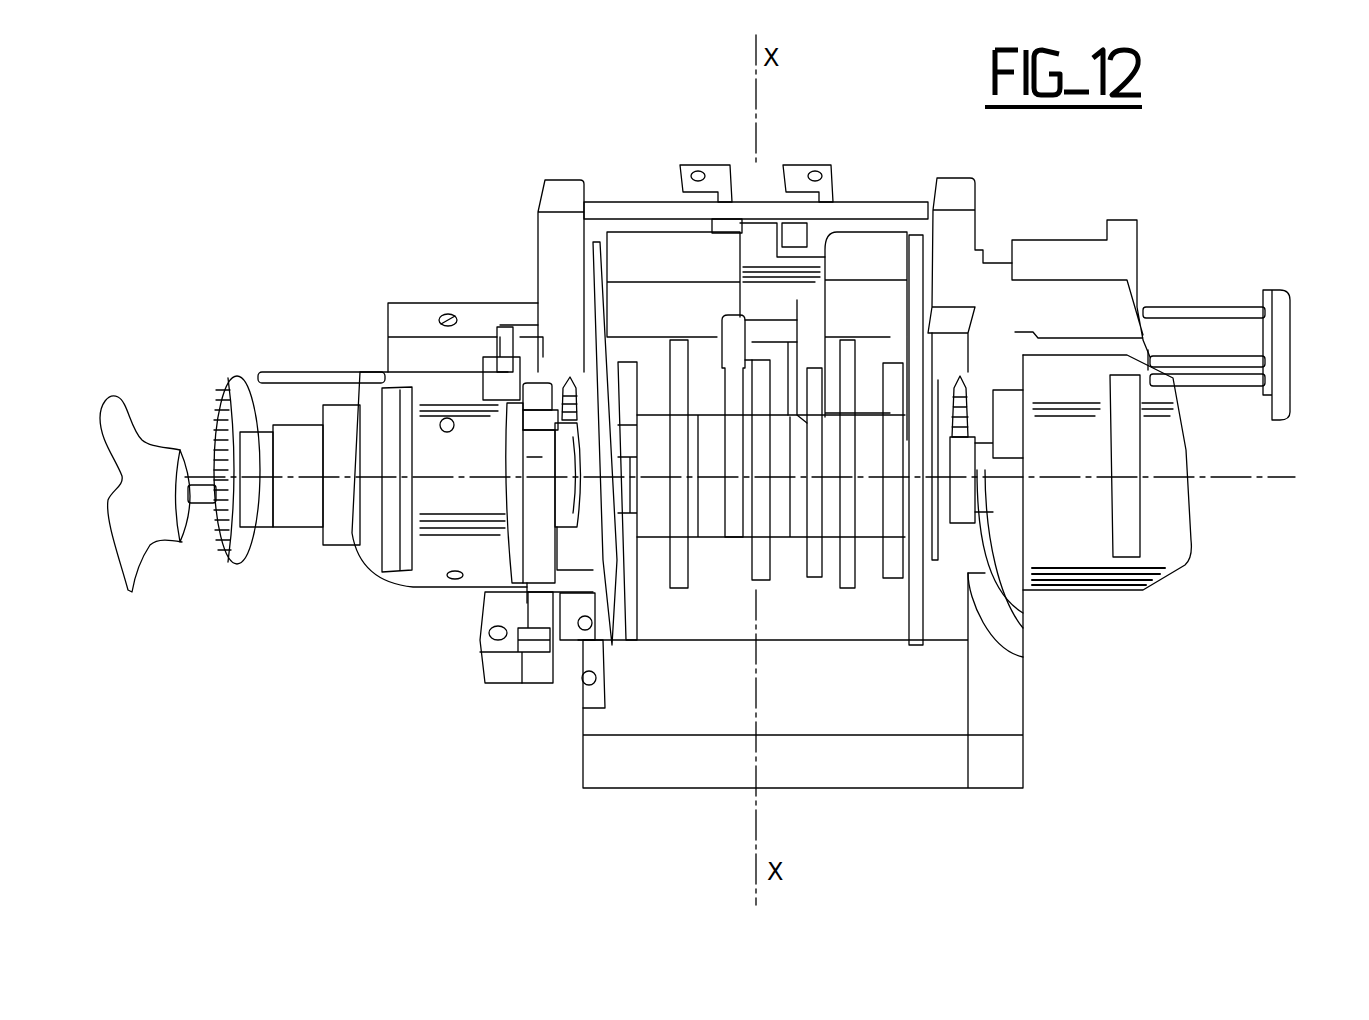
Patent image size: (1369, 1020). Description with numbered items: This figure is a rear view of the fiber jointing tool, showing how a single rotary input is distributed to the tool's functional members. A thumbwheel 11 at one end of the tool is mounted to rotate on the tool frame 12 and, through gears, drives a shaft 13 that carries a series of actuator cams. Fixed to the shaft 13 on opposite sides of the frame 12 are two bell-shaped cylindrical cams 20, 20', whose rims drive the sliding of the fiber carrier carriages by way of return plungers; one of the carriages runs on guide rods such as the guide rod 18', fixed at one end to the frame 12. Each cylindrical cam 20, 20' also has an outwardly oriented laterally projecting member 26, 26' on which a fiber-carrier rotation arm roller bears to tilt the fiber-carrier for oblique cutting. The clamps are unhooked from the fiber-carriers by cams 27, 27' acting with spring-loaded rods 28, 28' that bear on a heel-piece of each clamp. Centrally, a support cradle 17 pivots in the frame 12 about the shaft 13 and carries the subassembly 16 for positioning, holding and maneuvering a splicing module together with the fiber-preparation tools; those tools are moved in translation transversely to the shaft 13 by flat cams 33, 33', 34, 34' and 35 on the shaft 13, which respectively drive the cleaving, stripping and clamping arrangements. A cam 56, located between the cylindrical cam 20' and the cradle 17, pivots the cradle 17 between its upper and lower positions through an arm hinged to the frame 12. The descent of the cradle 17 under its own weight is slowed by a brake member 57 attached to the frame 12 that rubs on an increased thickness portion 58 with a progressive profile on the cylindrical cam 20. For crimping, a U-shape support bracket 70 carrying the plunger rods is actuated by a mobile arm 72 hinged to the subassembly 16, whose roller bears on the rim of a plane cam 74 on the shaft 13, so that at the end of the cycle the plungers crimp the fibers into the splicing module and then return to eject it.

The thumbwheel 11 is at (160, 525).
The tool frame 12 is at (1007, 708).
The shaft 13 is at (1023, 613).
The subassembly 16 is at (862, 250).
The support cradle 17 is at (612, 652).
The guide rod 18' is at (1216, 317).
The bell-shaped cylindrical cam 20 is at (472, 524).
The bell-shaped cylindrical cam 20' is at (1150, 472).
The laterally projecting member 26 is at (360, 520).
The laterally projecting member 26' is at (1191, 466).
The cam 27 is at (500, 555).
The cam 27' is at (1068, 564).
The spring-loaded rod 28 is at (533, 293).
The spring-loaded rod 28' is at (1050, 351).
The flat cam 33 is at (632, 612).
The flat cam 33' is at (911, 547).
The flat cam 34 is at (693, 531).
The flat cam 34' is at (865, 522).
The flat cam 35 is at (767, 580).
The cam 56 is at (1023, 657).
The brake member 57 is at (512, 683).
The increased thickness portion 58 is at (492, 358).
The U-shape support bracket 70 is at (790, 172).
The mobile arm 72 is at (813, 315).
The plane cam 74 is at (813, 580).